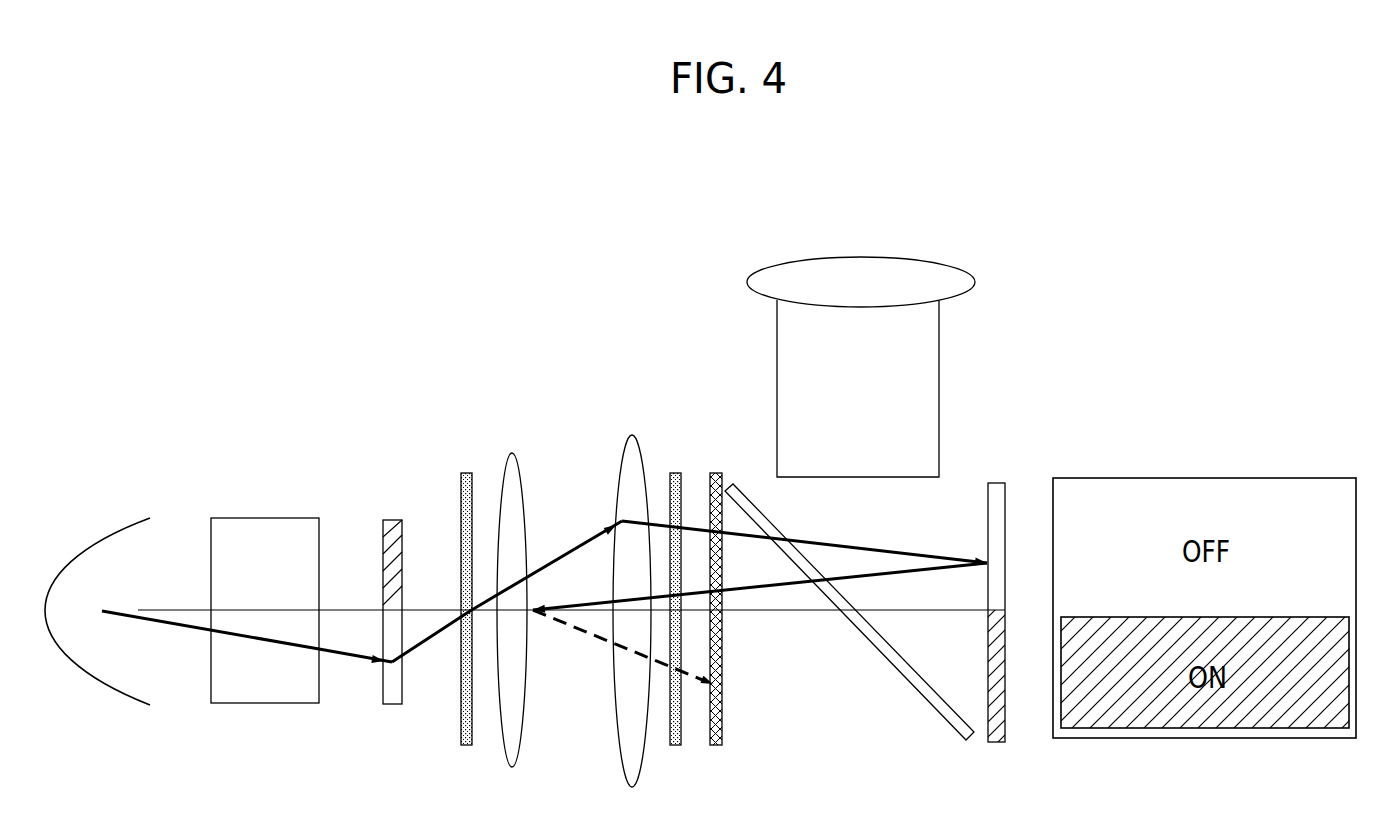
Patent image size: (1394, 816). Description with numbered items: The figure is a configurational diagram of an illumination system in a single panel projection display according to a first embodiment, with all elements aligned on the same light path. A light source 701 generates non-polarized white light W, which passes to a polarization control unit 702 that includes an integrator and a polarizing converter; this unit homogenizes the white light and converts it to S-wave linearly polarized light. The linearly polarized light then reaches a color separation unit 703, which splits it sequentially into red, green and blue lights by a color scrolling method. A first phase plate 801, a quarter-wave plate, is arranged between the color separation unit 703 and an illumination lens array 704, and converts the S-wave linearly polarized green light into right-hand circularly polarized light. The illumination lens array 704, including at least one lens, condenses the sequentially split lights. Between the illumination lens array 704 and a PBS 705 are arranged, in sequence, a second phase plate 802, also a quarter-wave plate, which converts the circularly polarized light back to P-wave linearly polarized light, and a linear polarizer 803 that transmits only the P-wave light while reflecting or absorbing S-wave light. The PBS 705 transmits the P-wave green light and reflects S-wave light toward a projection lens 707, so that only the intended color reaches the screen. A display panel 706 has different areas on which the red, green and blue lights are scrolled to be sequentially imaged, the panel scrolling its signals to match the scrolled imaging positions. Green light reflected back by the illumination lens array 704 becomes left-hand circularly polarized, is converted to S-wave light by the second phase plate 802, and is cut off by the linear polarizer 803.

The light source 701 is at (106, 537).
The polarization control unit 702 is at (260, 518).
The color separation unit 703 is at (388, 704).
The illumination lens array 704 is at (627, 755).
The PBS 705 is at (943, 720).
The display panel 706 is at (995, 482).
The projection lens 707 is at (973, 280).
The first phase plate 801 is at (468, 470).
The second phase plate 802 is at (673, 471).
The linear polarizer 803 is at (718, 472).
The white light W is at (173, 627).